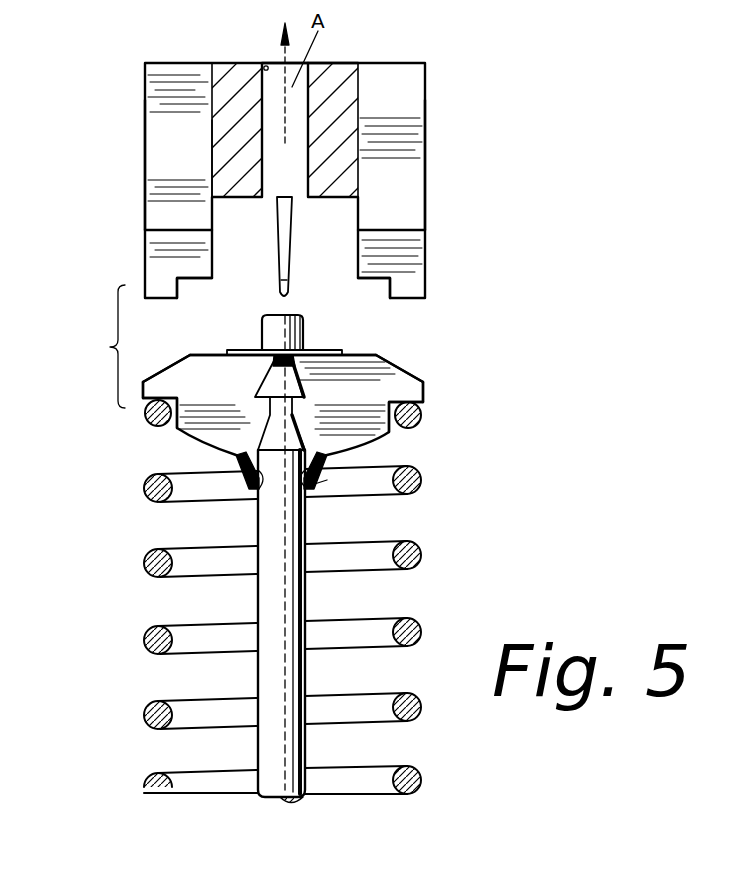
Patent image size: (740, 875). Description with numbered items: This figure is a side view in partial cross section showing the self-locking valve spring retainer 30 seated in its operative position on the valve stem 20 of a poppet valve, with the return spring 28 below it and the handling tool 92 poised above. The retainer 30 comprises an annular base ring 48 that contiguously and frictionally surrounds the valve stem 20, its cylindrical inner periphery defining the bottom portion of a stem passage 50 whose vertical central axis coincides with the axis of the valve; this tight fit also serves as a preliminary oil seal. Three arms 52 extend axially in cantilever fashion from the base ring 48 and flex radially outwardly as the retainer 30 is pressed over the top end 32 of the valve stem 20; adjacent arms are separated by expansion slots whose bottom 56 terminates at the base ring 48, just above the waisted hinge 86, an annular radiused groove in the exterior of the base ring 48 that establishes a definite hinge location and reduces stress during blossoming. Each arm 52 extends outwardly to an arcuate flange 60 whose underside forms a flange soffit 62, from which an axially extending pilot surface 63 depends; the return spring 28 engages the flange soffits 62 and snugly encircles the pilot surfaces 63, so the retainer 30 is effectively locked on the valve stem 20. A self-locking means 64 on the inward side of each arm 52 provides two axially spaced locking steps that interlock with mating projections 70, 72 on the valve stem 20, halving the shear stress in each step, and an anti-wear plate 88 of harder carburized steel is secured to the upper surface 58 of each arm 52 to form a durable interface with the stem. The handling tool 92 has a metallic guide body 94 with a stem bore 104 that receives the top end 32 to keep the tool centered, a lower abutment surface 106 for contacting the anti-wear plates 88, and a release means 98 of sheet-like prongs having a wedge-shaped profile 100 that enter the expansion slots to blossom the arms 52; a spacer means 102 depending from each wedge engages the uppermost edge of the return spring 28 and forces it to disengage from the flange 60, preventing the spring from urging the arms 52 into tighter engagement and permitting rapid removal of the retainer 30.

The valve stem 20 is at (288, 672).
The return spring 28 is at (421, 556).
The self-locking valve spring retainer 30 is at (432, 370).
The top end 32 is at (270, 348).
The base ring 48 is at (324, 483).
The stem passage 50 is at (258, 497).
The arms 52 is at (167, 366).
The bottom 56 is at (240, 457).
The upper surface 58 is at (200, 354).
The flange 60 is at (142, 386).
The flange soffit 62 is at (148, 425).
The pilot surface 63 is at (143, 413).
The self-locking means 64 is at (272, 360).
The mating projection 70 is at (317, 355).
The mating projection 72 is at (307, 403).
The waisted hinge 86 is at (325, 473).
The anti-wear plate 88 is at (233, 350).
The handling tool 92 is at (430, 63).
The guide body 94 is at (347, 63).
The release means 98 is at (145, 170).
The wedge-shaped profile 100 is at (145, 233).
The spacer means 102 is at (152, 285).
The stem bore 104 is at (265, 66).
The lower abutment surface 106 is at (213, 200).